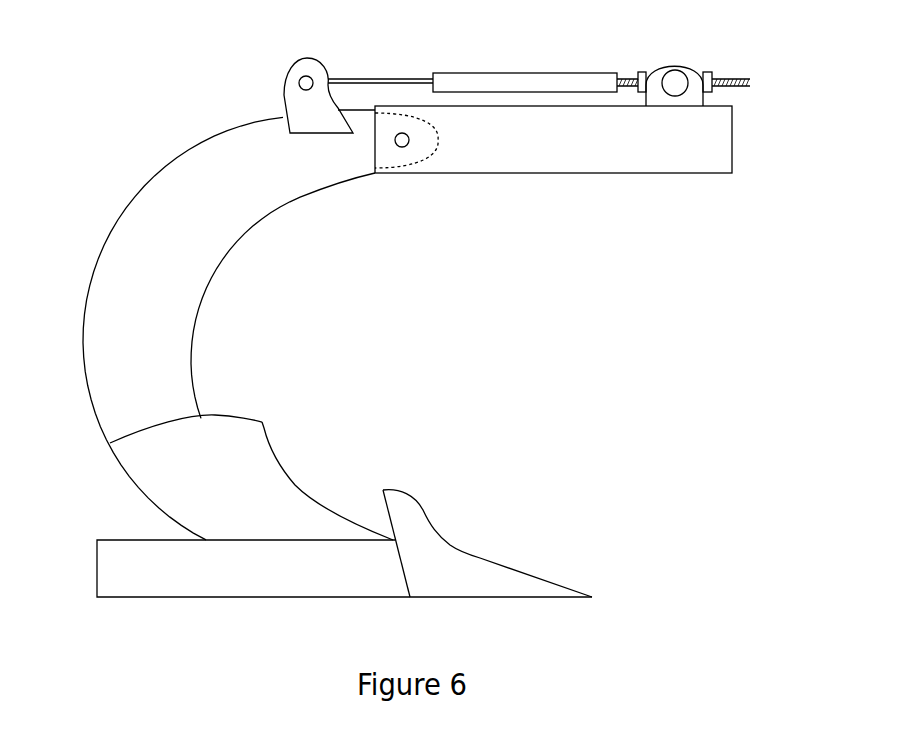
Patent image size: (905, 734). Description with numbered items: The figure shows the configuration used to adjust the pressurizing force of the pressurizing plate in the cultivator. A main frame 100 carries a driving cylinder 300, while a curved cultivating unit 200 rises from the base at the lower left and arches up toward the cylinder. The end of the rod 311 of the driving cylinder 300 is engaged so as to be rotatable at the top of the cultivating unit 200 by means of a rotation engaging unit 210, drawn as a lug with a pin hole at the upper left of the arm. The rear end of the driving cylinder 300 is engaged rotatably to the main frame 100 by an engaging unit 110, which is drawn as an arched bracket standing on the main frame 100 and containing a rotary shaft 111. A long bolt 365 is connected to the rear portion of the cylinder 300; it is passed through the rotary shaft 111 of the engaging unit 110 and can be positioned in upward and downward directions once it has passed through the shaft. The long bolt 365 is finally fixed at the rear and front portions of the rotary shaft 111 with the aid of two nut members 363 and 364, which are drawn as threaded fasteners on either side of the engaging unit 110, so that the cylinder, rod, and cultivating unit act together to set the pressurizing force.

The main frame 100 is at (733, 143).
The engaging unit 110 is at (677, 66).
The rotary shaft 111 is at (672, 90).
The cultivating unit 200 is at (90, 283).
The rotation engaging unit 210 is at (283, 80).
The driving cylinder 300 is at (509, 73).
The rod 311 is at (397, 79).
The nut member 363 is at (732, 78).
The nut member 364 is at (638, 73).
The long bolt 365 is at (707, 100).